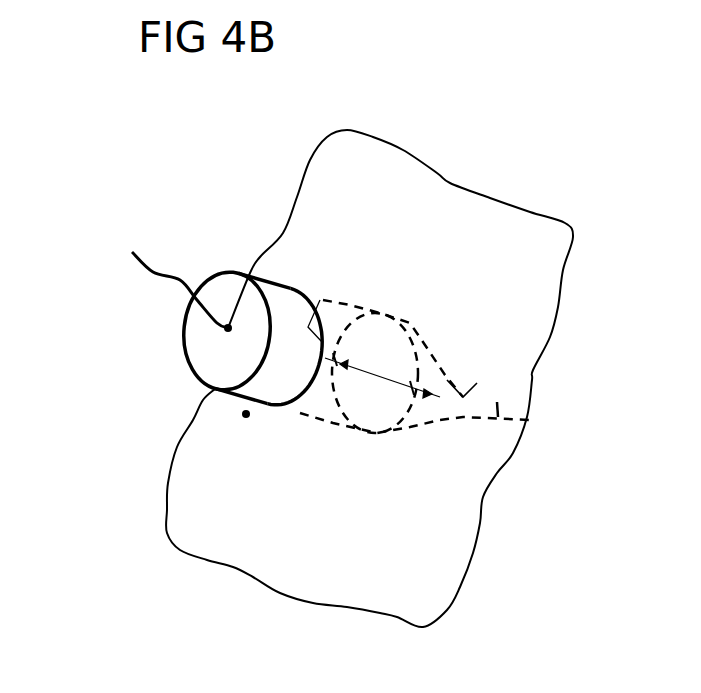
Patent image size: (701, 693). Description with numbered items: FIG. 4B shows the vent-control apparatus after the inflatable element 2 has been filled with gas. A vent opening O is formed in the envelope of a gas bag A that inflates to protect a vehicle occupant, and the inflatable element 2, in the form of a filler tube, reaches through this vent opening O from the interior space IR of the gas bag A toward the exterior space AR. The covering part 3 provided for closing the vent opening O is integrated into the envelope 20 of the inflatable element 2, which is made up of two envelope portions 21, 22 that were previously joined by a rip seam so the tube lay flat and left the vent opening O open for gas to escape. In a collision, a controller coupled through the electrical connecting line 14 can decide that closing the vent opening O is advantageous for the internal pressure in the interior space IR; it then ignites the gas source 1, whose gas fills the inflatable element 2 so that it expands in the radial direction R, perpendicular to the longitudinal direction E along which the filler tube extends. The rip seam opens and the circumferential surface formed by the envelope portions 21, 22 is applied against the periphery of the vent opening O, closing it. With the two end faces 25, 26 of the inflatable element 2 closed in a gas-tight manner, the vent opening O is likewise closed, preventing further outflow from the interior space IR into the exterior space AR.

The gas source 1 is at (220, 333).
The inflatable element 2 is at (246, 414).
The covering part 3 is at (287, 337).
The electrical connecting line 14 is at (153, 273).
The envelope of the inflatable element 20 is at (263, 380).
The envelope portion 21 is at (463, 397).
The envelope portion 22 is at (455, 420).
The end face 25 is at (217, 363).
The end face 26 is at (497, 426).
The gas bag A is at (550, 217).
The radial direction R is at (228, 327).
The vent opening O is at (320, 300).
The longitudinal direction E is at (379, 377).
The interior space of the gas bag IR is at (36, 348).
The exterior space AR is at (588, 355).